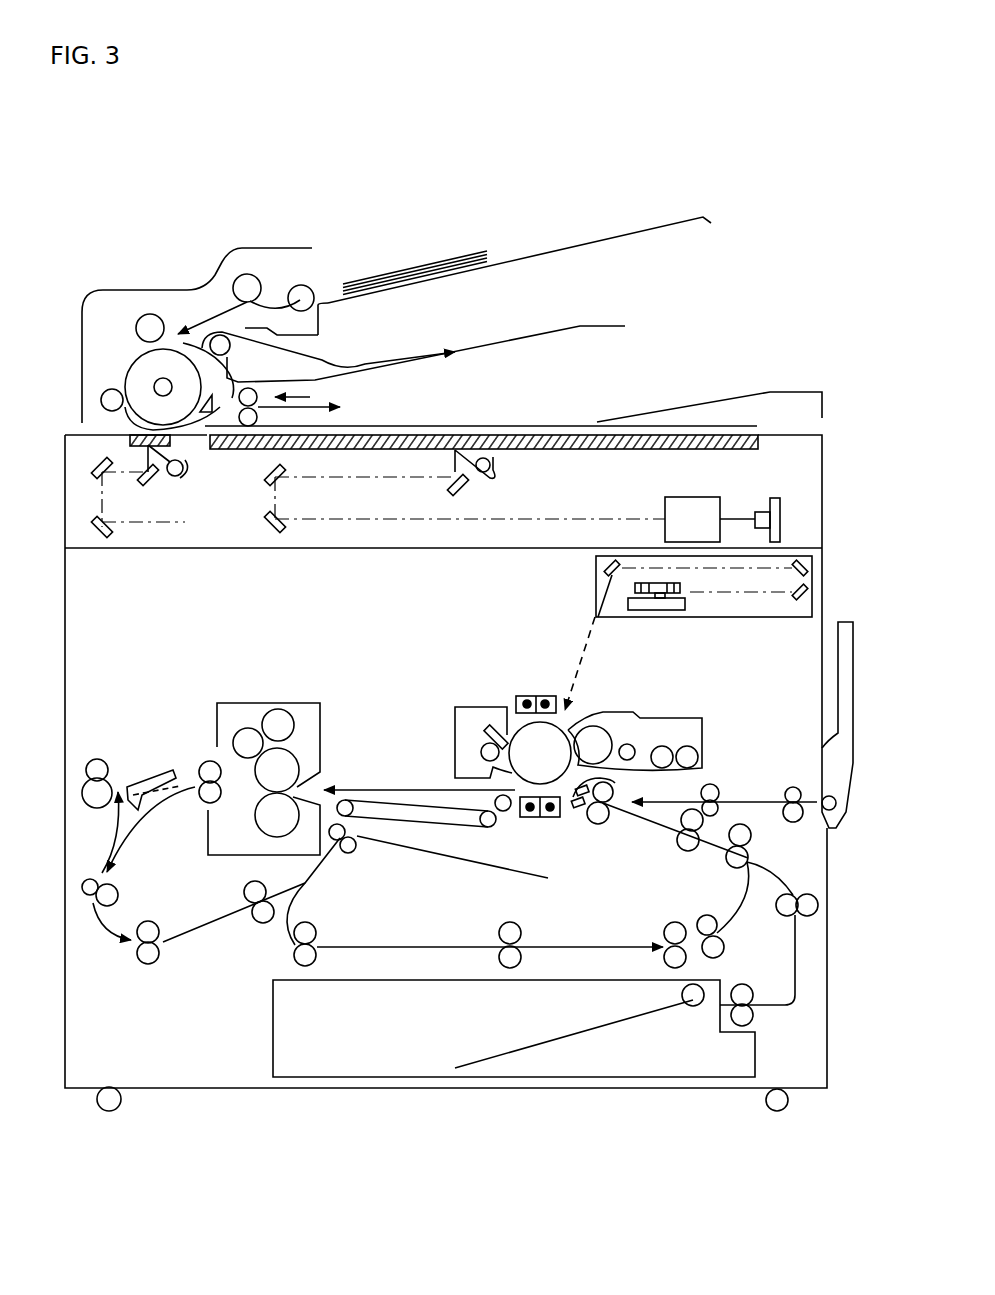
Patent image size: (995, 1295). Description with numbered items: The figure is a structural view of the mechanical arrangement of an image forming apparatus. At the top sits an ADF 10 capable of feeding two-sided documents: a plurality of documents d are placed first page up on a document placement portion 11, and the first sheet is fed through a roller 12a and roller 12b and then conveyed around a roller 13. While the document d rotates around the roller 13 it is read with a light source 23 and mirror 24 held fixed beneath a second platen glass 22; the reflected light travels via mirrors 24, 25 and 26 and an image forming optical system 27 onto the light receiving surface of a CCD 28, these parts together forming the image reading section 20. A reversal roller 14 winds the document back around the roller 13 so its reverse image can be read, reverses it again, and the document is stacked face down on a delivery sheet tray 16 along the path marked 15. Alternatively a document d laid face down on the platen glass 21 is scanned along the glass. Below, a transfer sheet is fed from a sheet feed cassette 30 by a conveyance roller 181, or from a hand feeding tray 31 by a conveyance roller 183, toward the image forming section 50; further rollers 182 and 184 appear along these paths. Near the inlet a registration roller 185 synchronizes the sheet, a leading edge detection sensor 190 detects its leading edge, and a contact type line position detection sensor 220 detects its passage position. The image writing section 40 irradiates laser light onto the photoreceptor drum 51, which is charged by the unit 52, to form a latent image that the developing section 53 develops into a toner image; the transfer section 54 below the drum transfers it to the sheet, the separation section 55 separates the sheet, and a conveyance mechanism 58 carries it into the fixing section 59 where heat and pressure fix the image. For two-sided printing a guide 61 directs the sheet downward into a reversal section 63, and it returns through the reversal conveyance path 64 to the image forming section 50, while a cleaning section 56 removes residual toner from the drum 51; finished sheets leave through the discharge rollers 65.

The ADF 10 is at (710, 298).
The document placement portion 11 is at (482, 268).
The document d is at (396, 282).
The roller 12a is at (301, 298).
The roller 12b is at (247, 274).
The roller 13 is at (128, 380).
The reversal roller 14 is at (248, 392).
The document discharge path 15 is at (332, 418).
The delivery sheet tray 16 is at (501, 342).
The image reading section 20 is at (622, 465).
The platen glass 21 is at (563, 437).
The second platen glass 22 is at (125, 444).
The light source 23 is at (493, 465).
The mirror 24 is at (470, 497).
The mirror 25 is at (265, 474).
The mirror 26 is at (266, 521).
The image forming optical system 27 is at (728, 498).
The CCD 28 is at (782, 505).
The sheet feed cassette 30 is at (334, 1042).
The hand feeding tray 31 is at (845, 620).
The image writing section 40 is at (647, 555).
The image forming section 50 is at (374, 658).
The photoreceptor drum 51 is at (568, 730).
The charger 52 is at (533, 696).
The developing section 53 is at (640, 712).
The transfer section 54 is at (550, 817).
The separation section 55 is at (526, 817).
The cleaning section 56 is at (481, 707).
The conveyance mechanism 58 is at (455, 828).
The fixing section 59 is at (322, 733).
The guide 61 is at (165, 770).
The reversal section 63 is at (134, 912).
The reversal conveyance path 64 is at (341, 927).
The discharge rollers 65 is at (80, 765).
The conveyance roller 181 is at (681, 995).
The feed rollers 182 is at (688, 851).
The conveyance roller 183 is at (793, 788).
The registration rollers 184 is at (713, 785).
The registration roller 185 is at (603, 815).
The leading edge detection sensor 190 is at (578, 808).
The position detection sensor 220 is at (620, 790).